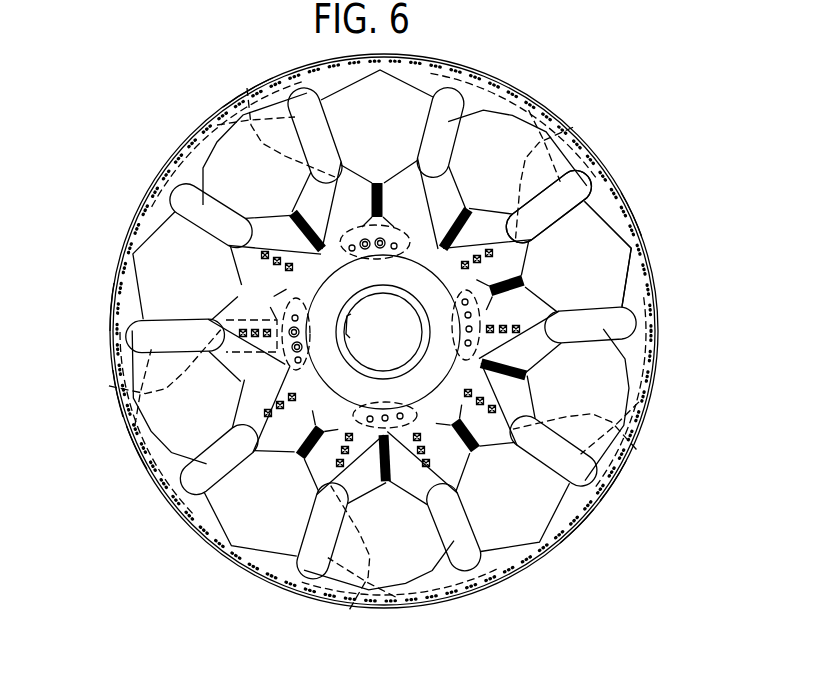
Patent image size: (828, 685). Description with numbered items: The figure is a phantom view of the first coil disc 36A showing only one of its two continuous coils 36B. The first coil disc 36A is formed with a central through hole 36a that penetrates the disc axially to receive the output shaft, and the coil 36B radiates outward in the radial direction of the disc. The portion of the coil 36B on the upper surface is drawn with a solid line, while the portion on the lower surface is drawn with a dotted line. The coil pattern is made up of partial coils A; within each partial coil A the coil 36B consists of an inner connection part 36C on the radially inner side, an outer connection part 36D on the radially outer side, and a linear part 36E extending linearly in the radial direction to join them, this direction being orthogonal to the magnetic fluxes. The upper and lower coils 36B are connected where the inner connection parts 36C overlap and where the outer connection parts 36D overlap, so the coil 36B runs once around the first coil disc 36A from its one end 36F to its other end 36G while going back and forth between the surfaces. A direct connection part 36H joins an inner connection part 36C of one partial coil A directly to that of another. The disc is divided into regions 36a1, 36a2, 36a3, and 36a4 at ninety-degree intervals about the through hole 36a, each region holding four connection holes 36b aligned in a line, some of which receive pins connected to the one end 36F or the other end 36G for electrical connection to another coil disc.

The first coil disc 36A is at (168, 125).
The region 36a1 is at (244, 86).
The coil 36B is at (177, 203).
The through hole 36a is at (287, 302).
The direct connection part 36H is at (318, 278).
The one end 36F is at (110, 295).
The other end 36G is at (126, 377).
The region 36a4 is at (137, 425).
The connection hole 36b is at (355, 416).
The inner connection part 36C is at (500, 210).
The linear part 36E is at (506, 240).
The partial coil A is at (642, 202).
The outer connection part 36D is at (625, 240).
The region 36a2 is at (633, 455).
The region 36a3 is at (580, 525).